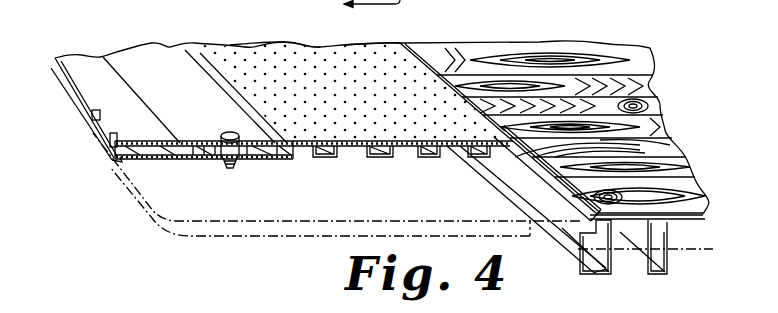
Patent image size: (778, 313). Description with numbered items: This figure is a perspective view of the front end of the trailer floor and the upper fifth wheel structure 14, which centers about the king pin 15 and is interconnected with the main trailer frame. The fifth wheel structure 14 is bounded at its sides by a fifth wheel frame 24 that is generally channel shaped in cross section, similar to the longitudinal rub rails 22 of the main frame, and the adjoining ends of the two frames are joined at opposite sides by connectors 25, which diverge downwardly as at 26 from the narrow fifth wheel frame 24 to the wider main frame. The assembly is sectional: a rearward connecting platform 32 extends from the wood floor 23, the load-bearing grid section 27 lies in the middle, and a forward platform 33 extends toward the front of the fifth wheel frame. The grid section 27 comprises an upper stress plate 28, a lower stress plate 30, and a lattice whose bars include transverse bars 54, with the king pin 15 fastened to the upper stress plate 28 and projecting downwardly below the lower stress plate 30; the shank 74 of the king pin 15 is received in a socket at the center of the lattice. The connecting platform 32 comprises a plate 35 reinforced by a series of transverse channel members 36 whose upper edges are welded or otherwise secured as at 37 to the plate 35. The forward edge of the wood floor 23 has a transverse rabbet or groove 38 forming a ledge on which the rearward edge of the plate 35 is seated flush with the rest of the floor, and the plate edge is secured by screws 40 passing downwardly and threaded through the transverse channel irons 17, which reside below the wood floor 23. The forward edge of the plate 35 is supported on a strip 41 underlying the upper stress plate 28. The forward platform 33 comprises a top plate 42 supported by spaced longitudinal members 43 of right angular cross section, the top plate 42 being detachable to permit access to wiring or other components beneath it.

The fifth wheel structure 14 is at (184, 190).
The king pin 15 is at (232, 166).
The transverse channel irons 17 is at (613, 265).
The rub rails 22 is at (712, 250).
The floor 23 is at (625, 82).
The fifth wheel frame 24 is at (267, 227).
The connectors 25 is at (563, 233).
The downward divergence 26 is at (550, 240).
The load-bearing grid section 27 is at (144, 65).
The upper stress plate 28 is at (172, 58).
The lower stress plate 30 is at (203, 156).
The connecting platform 32 is at (290, 64).
The forward platform 33 is at (86, 72).
The plate 35 is at (360, 55).
The transverse channel members 36 is at (429, 152).
The weld 37 is at (263, 68).
The transverse rabbet or groove 38 is at (540, 163).
The screws 40 is at (420, 67).
The strip 41 is at (287, 148).
The top plate 42 is at (100, 92).
The longitudinal members 43 is at (120, 158).
The transverse bars 54 is at (204, 146).
The shank 74 is at (240, 147).